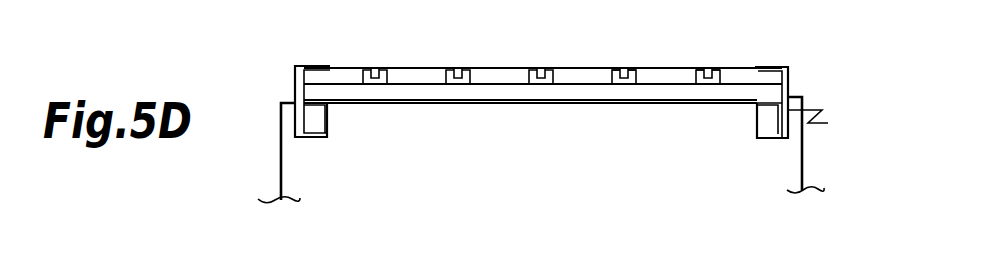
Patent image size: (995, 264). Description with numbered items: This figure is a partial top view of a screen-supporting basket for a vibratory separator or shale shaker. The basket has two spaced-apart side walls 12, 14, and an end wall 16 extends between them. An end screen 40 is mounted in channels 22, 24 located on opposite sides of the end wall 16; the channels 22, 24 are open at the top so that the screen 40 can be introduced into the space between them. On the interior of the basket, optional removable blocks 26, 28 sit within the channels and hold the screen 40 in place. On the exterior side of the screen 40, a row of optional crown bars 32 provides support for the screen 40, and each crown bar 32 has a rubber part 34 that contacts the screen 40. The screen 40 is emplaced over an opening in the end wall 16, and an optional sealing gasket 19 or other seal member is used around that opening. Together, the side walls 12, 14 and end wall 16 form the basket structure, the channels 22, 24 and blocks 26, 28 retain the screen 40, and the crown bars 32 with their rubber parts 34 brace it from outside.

The side wall 12 is at (281, 162).
The side wall 14 is at (805, 173).
The end wall 16 is at (797, 95).
The sealing gasket 19 is at (313, 100).
The channel 22 is at (293, 91).
The channel 24 is at (828, 123).
The removable block 26 is at (318, 120).
The removable block 28 is at (768, 128).
The crown bar 32 is at (541, 70).
The rubber part 34 is at (613, 80).
The end screen 40 is at (507, 94).